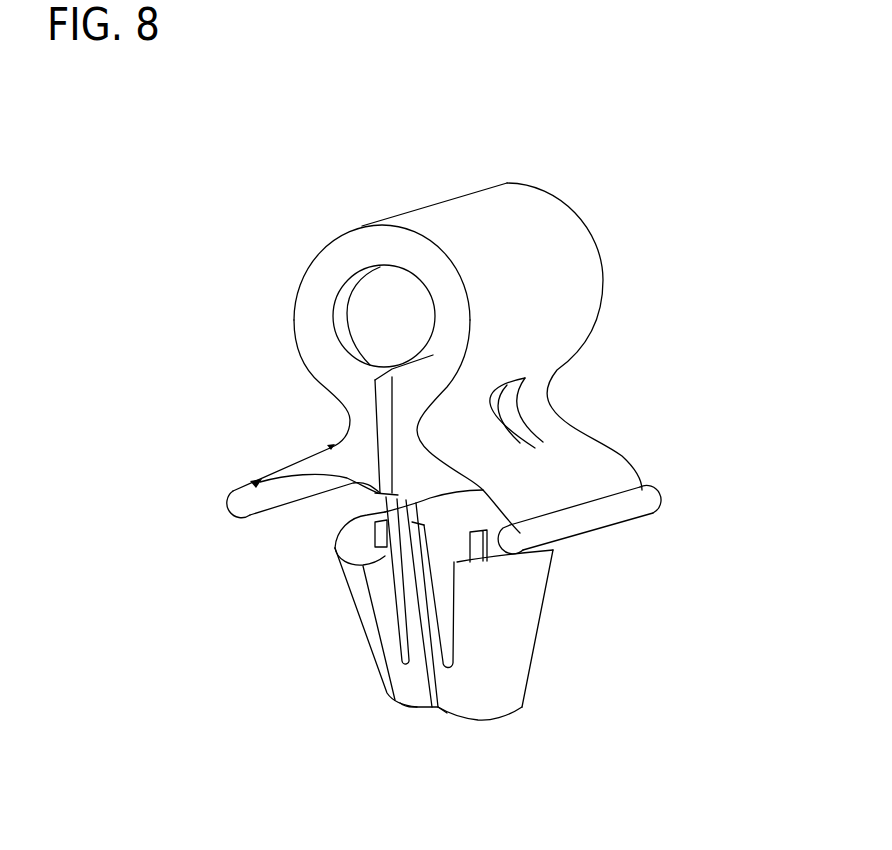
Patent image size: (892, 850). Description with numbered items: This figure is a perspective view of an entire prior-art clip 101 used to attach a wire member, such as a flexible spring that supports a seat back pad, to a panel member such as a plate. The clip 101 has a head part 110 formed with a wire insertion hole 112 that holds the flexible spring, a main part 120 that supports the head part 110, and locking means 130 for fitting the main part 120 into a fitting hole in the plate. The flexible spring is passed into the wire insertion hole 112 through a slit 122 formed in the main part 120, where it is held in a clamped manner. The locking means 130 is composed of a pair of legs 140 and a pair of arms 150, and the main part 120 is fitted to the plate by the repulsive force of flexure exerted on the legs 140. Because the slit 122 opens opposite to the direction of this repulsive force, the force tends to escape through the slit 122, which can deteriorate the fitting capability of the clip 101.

The clip 101 is at (294, 165).
The head part 110 is at (500, 223).
The wire insertion hole 112 is at (390, 313).
The main part 120 is at (445, 543).
The slit 122 is at (413, 683).
The locking means 130 is at (120, 492).
The leg 140 is at (345, 578).
The arm 150 is at (283, 472).